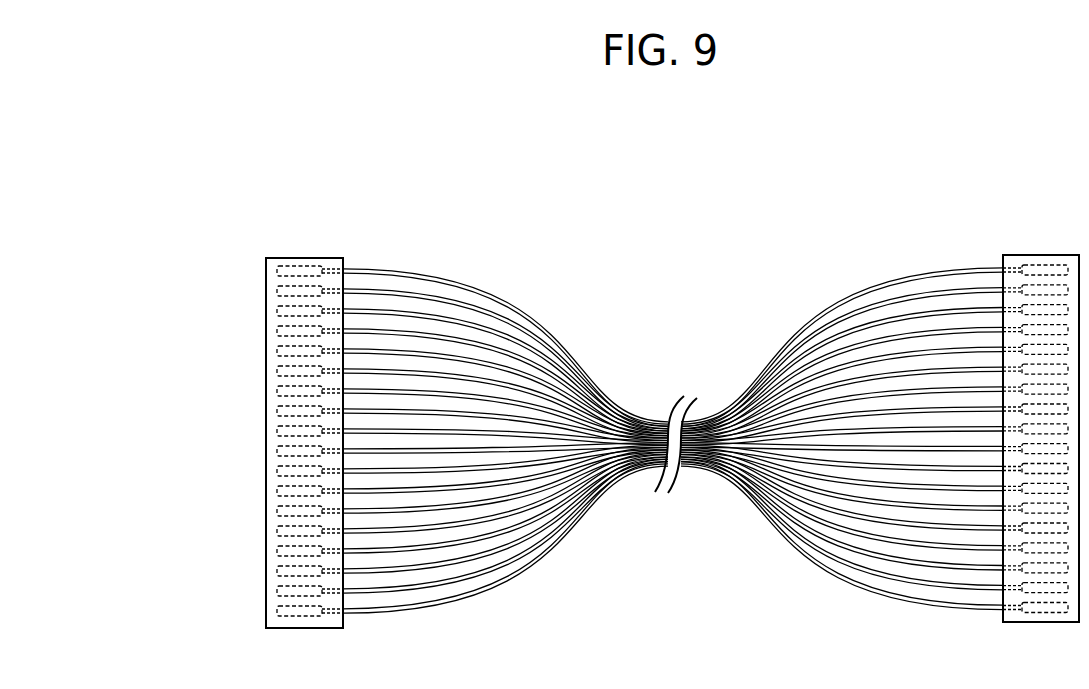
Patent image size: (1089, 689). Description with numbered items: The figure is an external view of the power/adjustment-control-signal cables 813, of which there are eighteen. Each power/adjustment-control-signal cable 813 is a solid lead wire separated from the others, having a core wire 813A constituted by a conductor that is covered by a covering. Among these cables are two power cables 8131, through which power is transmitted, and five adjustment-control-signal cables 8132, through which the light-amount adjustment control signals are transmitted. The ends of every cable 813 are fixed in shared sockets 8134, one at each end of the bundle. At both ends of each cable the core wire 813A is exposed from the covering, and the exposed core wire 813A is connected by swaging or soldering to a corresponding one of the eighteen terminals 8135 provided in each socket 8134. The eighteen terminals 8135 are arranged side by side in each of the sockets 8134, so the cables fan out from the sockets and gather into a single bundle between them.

The power/adjustment-control-signal cable 813 is at (673, 408).
The power cable 8131 is at (390, 360).
The adjustment-control-signal cable 8132 is at (405, 397).
The core wire 813A is at (343, 313).
The socket 8134 is at (292, 258).
The terminal 8135 is at (276, 312).